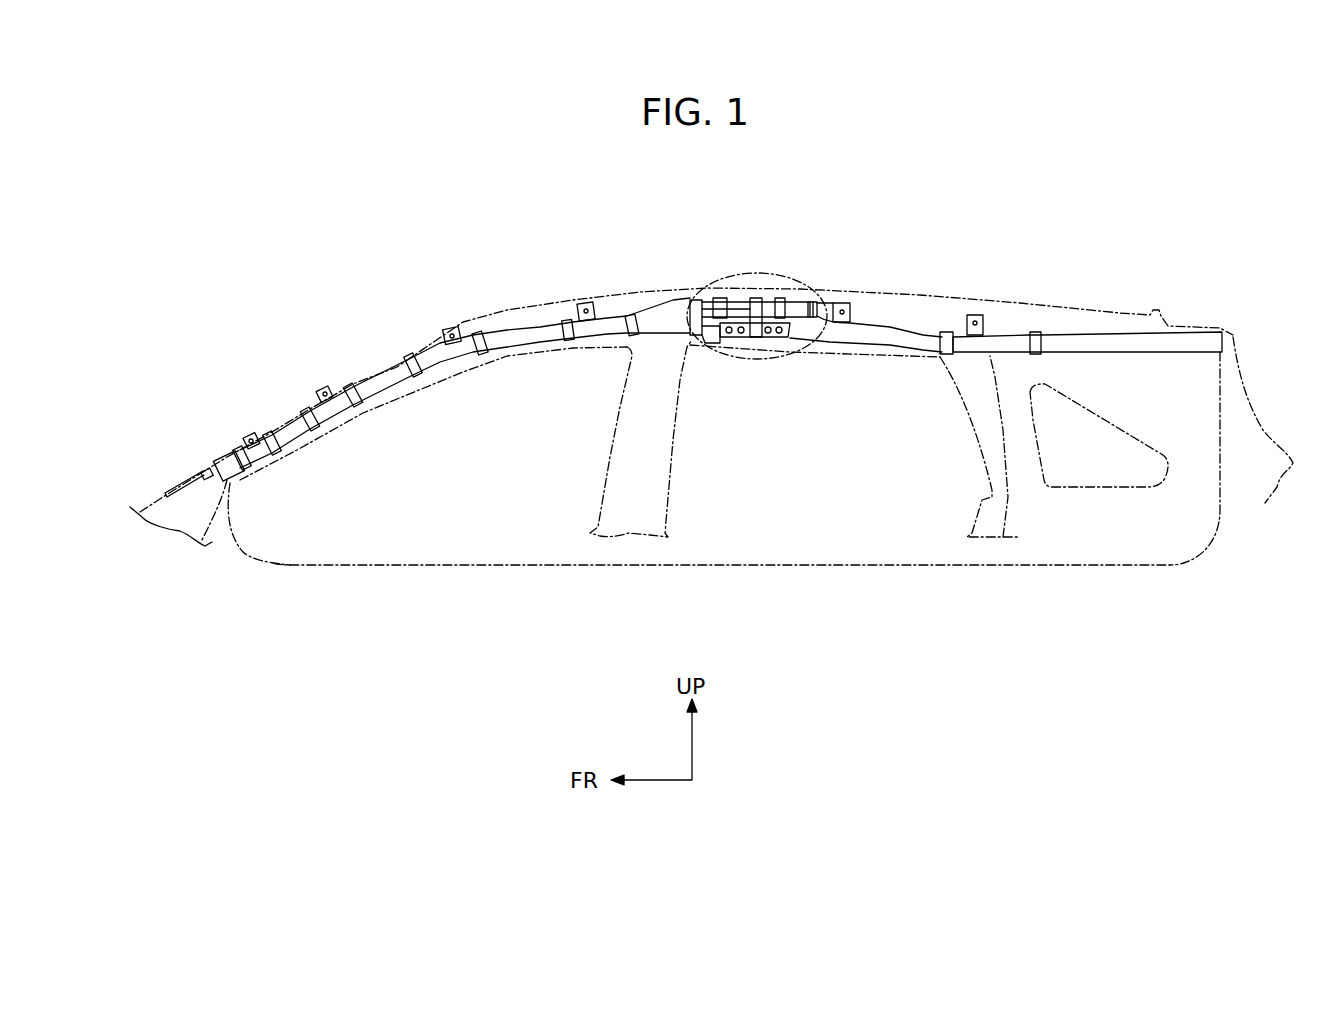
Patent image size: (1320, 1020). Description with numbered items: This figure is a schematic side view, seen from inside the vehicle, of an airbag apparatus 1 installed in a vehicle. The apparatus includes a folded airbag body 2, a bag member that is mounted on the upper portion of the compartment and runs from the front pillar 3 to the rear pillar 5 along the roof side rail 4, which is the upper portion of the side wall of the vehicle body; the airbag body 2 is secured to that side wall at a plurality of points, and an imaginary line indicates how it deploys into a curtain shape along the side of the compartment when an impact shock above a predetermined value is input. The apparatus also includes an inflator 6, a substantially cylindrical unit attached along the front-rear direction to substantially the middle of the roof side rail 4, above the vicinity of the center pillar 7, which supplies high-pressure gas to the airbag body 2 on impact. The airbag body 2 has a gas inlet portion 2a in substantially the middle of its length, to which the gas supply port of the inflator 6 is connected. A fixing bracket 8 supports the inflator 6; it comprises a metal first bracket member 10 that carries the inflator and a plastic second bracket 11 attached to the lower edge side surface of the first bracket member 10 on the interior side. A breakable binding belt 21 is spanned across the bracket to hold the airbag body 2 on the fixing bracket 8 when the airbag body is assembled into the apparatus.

The airbag apparatus 1 is at (1076, 322).
The airbag body 2 is at (995, 335).
The gas inlet portion 2a is at (710, 298).
The front pillar 3 is at (363, 363).
The roof side rail 4 is at (887, 292).
The rear pillar 5 is at (1002, 540).
The inflator 6 is at (795, 302).
The center pillar 7 is at (632, 507).
The fixing bracket 8 is at (783, 346).
The first bracket member 10 is at (737, 300).
The second bracket 11 is at (740, 340).
The binding belt 21 is at (757, 300).